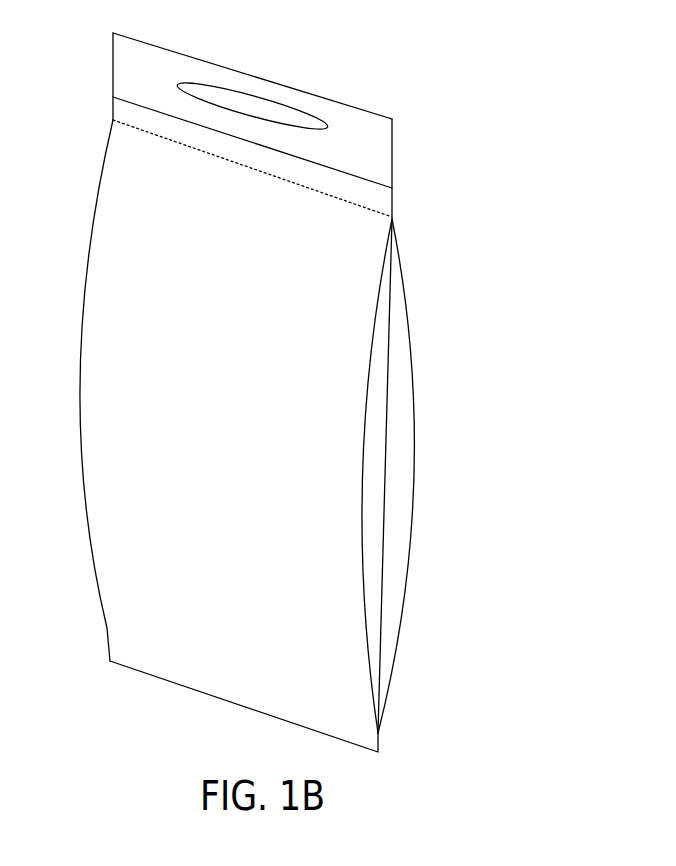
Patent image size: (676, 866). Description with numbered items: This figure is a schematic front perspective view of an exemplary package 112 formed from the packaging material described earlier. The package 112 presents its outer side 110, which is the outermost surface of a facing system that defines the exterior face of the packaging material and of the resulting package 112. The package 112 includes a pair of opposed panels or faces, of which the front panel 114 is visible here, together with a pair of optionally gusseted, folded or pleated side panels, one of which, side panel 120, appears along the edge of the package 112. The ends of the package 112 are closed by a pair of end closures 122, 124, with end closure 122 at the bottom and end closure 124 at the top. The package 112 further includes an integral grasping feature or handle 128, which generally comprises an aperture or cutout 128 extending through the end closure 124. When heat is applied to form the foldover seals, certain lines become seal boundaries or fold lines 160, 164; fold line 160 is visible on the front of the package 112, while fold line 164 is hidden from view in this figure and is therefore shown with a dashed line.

The outer side 110 is at (232, 408).
The package 112 is at (536, 148).
The panel 114 is at (81, 438).
The side panel 120 is at (407, 447).
The end closure 122 is at (394, 738).
The end closure 124 is at (405, 119).
The handle 128 is at (261, 101).
The fold line 160 is at (127, 98).
The fold line 164 is at (128, 126).